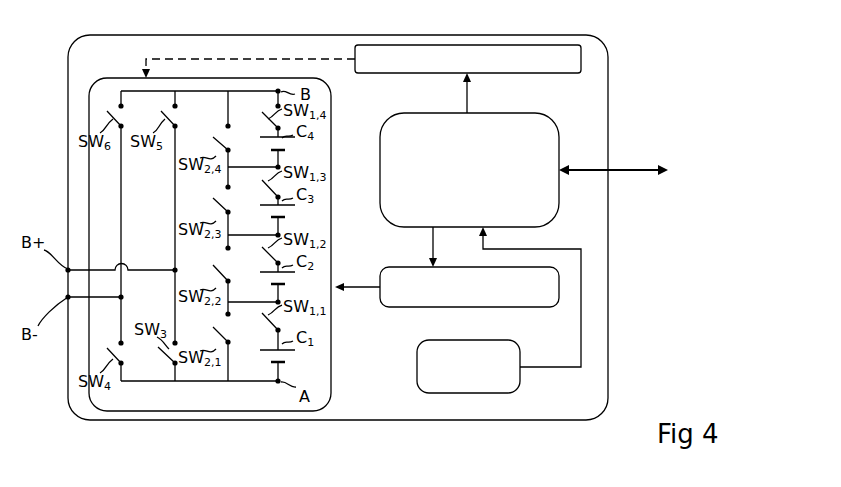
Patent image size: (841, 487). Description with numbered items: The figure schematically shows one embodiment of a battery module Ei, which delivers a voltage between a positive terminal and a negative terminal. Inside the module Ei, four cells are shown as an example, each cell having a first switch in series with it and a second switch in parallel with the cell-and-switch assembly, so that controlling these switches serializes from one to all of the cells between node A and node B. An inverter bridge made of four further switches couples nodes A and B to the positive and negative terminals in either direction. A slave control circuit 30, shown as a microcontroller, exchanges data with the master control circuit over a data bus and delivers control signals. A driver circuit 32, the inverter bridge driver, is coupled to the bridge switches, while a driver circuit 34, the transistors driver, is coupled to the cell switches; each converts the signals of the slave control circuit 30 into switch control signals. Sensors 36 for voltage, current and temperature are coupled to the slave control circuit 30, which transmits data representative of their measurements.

The slave control circuit 30 is at (523, 113).
The driver circuit 32 is at (399, 74).
The driver circuit 34 is at (404, 311).
The sensors 36 is at (430, 393).
The module Ei is at (620, 72).